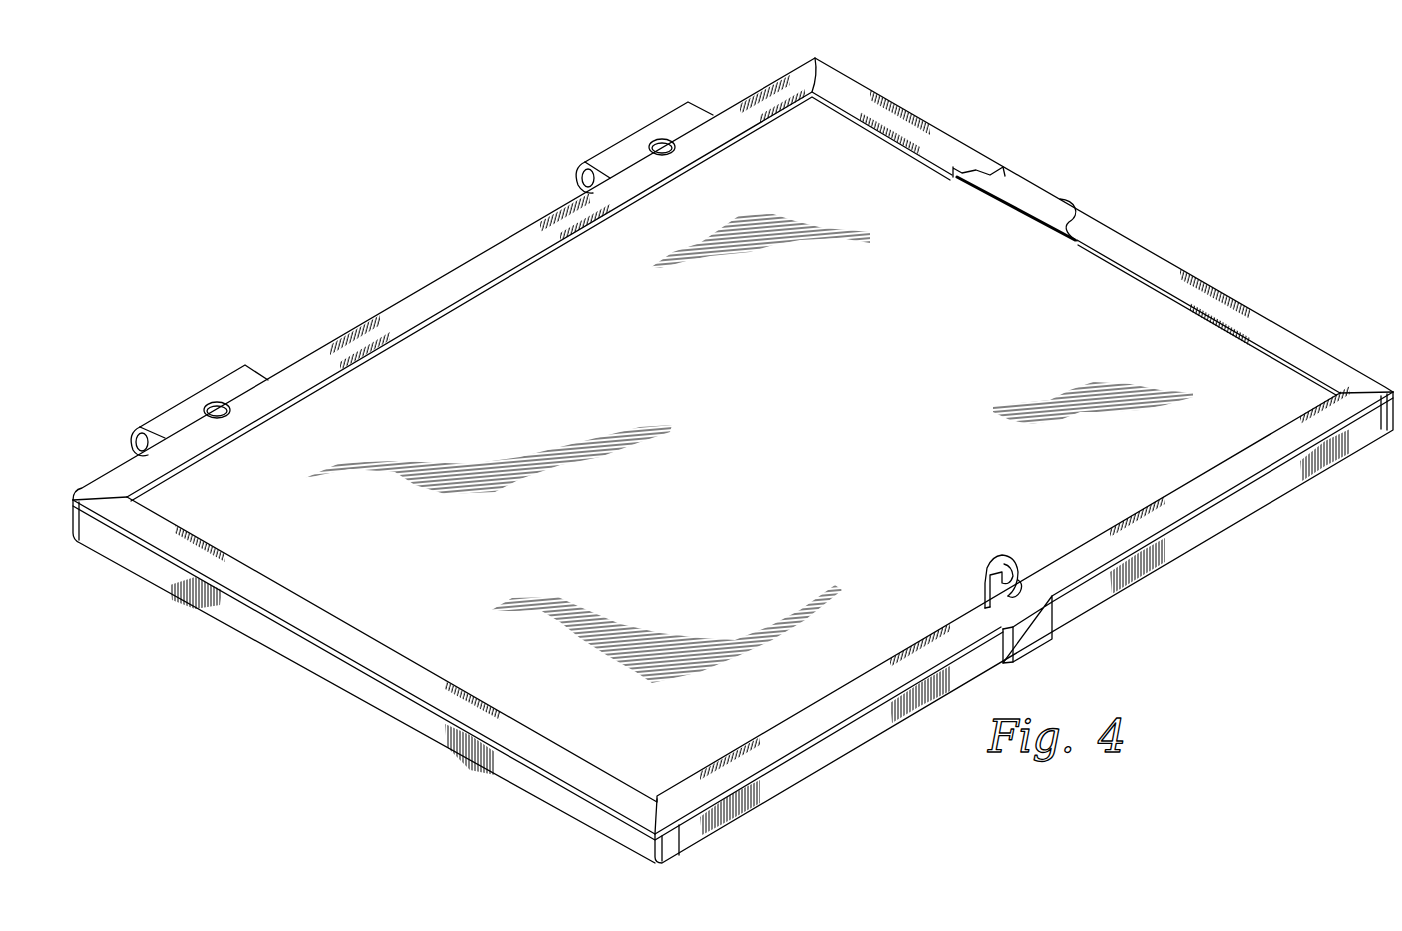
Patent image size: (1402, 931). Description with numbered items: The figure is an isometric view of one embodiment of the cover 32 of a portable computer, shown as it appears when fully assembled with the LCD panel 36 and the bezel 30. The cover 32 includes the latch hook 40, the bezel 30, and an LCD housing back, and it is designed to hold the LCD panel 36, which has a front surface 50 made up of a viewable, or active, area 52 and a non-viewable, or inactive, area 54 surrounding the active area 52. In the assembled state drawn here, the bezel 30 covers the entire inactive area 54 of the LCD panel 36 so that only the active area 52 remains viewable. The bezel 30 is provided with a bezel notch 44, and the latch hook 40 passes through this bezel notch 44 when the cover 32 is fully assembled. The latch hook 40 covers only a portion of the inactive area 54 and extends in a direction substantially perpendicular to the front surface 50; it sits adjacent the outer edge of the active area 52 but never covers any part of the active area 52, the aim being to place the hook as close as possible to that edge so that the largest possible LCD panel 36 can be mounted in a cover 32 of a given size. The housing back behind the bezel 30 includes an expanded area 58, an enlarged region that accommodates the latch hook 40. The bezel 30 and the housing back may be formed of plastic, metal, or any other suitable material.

The bezel 30 is at (733, 460).
The cover 32 is at (733, 460).
The LCD panel 36 is at (836, 428).
The latch hook 40 is at (997, 560).
The bezel notch 44 is at (1028, 583).
The front surface 50 is at (560, 720).
The active area 52 is at (912, 177).
The inactive area 54 is at (1022, 200).
The expanded area 58 is at (1036, 636).